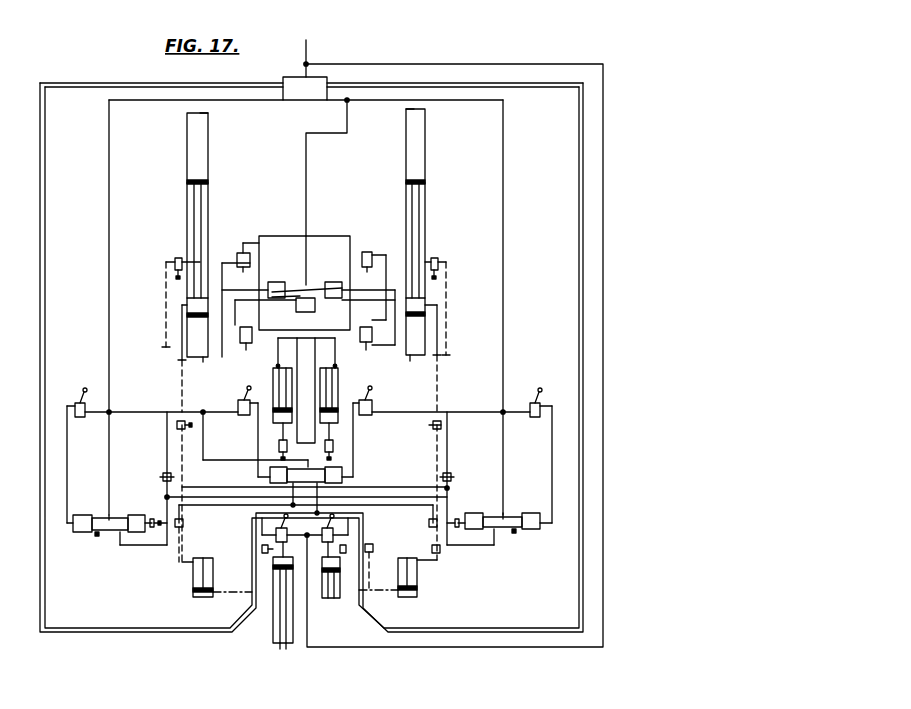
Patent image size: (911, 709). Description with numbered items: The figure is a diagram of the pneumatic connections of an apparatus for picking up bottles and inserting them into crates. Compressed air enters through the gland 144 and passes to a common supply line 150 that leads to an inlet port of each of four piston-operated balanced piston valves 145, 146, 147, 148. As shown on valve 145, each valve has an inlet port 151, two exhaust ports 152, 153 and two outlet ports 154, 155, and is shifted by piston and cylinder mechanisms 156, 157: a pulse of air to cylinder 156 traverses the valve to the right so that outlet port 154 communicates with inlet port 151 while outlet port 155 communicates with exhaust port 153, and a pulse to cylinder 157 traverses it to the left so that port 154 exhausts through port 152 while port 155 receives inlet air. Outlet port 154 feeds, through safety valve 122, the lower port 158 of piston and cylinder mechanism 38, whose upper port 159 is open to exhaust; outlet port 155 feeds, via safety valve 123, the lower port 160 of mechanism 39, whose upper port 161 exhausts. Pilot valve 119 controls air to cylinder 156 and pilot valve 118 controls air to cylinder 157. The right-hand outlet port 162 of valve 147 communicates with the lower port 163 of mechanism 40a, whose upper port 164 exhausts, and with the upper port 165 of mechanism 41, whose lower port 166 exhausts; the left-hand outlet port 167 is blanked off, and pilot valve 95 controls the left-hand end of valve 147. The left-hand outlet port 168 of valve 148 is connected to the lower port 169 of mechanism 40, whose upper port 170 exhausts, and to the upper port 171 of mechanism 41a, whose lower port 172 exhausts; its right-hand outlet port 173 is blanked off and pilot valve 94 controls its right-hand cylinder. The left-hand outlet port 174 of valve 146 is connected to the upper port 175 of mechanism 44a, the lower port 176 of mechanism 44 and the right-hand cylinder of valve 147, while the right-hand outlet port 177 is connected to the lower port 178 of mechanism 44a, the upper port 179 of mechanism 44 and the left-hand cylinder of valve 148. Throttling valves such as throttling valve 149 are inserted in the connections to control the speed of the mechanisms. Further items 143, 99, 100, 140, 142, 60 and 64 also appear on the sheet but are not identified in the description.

The supply line 143 is at (308, 46).
The gland 144 is at (305, 96).
The upper port 164 is at (206, 112).
The piston and cylinder mechanism 40a is at (208, 155).
The upper port 170 is at (406, 107).
The common supply line 150 is at (109, 226).
The piston and cylinder mechanism 40 is at (406, 165).
The safety valve 123 is at (243, 252).
The safety valve 122 is at (368, 251).
The lower port 163 is at (183, 249).
The lower port 169 is at (434, 257).
The throttling valve 149 is at (446, 261).
The exhaust port 152 is at (284, 282).
The exhaust port 153 is at (325, 282).
The piston and cylinder mechanism 156 is at (272, 284).
The piston and cylinder mechanism 157 is at (340, 290).
The inlet port 151 is at (272, 296).
The piston-operated balanced piston valve 145 is at (342, 296).
The upper port 165 is at (428, 302).
The upper port 171 is at (185, 303).
The outlet port 154 is at (300, 296).
The outlet port 155 is at (310, 298).
The piston and cylinder mechanism 41a is at (197, 328).
The piston and cylinder mechanism 41 is at (425, 328).
The lower port 172 is at (203, 362).
The pilot valve 119 is at (243, 345).
The piston and cylinder mechanism 38 is at (273, 380).
The upper port 159 is at (277, 366).
The upper port 161 is at (345, 357).
The piston and cylinder mechanism 39 is at (338, 380).
The pilot valve 118 is at (368, 344).
The lower port 166 is at (420, 365).
The pilot valve 95 is at (83, 400).
The solenoid valve 100 is at (241, 414).
The lower port 158 is at (274, 425).
The lower port 160 is at (338, 425).
The solenoid valve 99 is at (370, 414).
The pilot valve 94 is at (535, 415).
The piston-operated valve 146 is at (320, 476).
The left-hand outlet port 174 is at (276, 484).
The right-hand outlet port 177 is at (340, 485).
The piston valve 147 is at (112, 518).
The solenoid valve 140 is at (276, 532).
The solenoid valve 142 is at (330, 538).
The piston and cylinder mechanism 44a is at (210, 565).
The upper port 179 is at (385, 570).
The left-hand outlet port 167 is at (96, 535).
The right-hand outlet port 162 is at (123, 545).
The upper port 175 is at (190, 565).
The lower port 178 is at (208, 595).
The piston and cylinder mechanism 44 is at (398, 576).
The left-hand outlet port 168 is at (492, 546).
The piston-operated piston valve 148 is at (505, 527).
The right-hand outlet port 173 is at (516, 532).
The lower port 176 is at (420, 590).
The cylinder 60 is at (273, 628).
The cylinder 64 is at (338, 595).